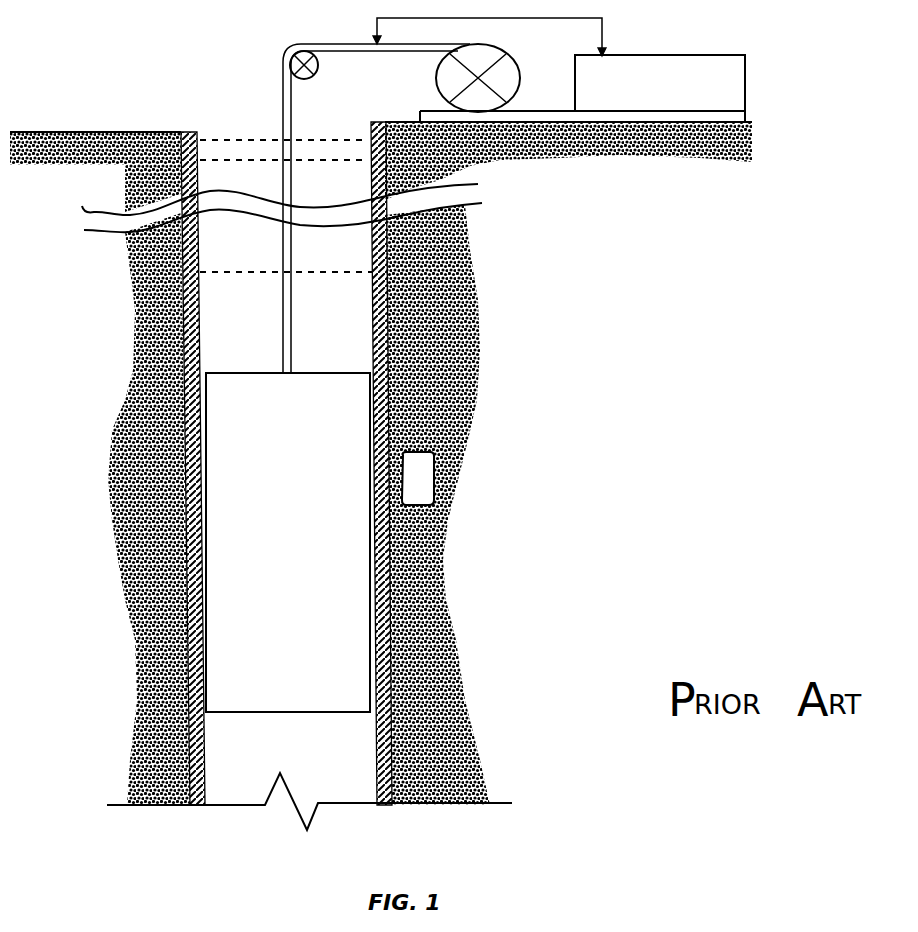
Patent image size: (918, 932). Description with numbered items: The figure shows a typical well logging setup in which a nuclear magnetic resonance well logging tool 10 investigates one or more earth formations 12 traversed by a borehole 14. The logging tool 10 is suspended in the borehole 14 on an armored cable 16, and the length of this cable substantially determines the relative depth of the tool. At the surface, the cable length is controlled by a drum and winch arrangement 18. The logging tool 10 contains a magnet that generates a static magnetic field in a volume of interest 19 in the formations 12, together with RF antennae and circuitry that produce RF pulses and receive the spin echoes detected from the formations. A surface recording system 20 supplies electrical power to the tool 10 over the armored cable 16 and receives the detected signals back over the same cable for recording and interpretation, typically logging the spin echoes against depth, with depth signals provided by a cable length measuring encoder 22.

The NMR well logging tool 10 is at (258, 391).
The earth formations 12 is at (455, 170).
The borehole 14 is at (140, 737).
The armored cable 16 is at (292, 306).
The drum and winch arrangement 18 is at (500, 46).
The volume of interest 19 is at (465, 423).
The surface recording system 20 is at (655, 55).
The cable length measuring encoder 22 is at (313, 50).